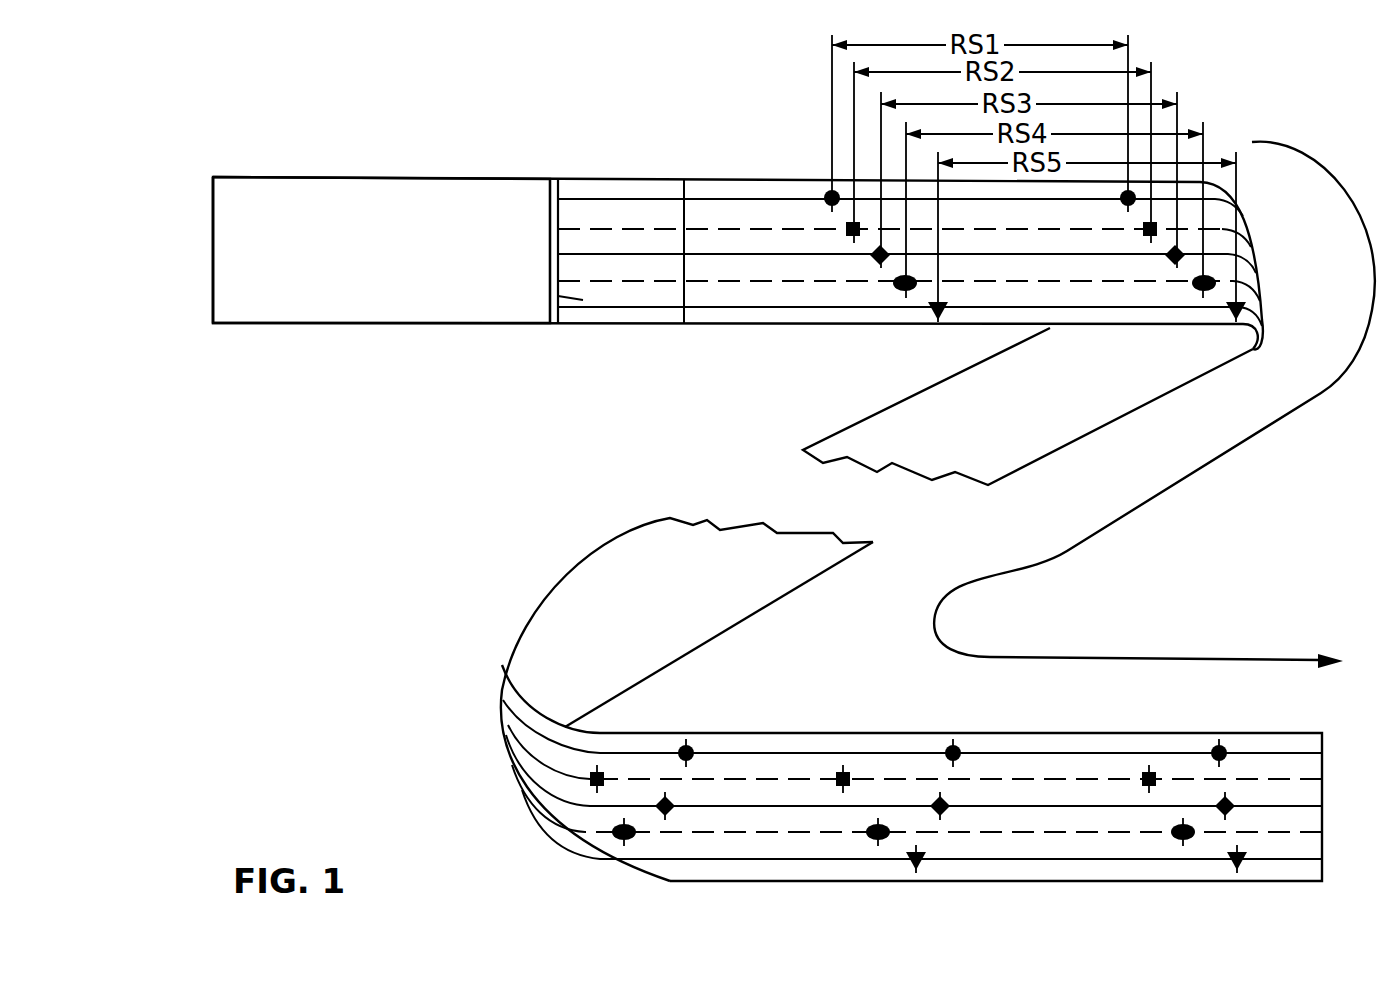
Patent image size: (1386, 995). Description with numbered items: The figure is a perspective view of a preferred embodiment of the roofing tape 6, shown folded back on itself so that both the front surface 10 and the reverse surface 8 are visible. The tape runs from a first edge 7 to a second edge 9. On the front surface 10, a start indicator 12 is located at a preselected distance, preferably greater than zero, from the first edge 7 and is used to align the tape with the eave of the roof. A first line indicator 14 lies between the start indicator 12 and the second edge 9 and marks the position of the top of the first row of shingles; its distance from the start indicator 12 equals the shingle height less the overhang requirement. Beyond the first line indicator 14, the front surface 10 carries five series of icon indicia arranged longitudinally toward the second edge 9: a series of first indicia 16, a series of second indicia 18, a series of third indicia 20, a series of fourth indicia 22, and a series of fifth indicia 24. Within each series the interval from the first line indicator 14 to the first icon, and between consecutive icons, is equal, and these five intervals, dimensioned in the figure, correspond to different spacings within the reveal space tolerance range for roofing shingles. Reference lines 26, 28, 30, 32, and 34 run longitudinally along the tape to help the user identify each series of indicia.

The roofing tape 6 is at (400, 324).
The first edge 7 is at (213, 243).
The reverse surface 8 is at (640, 556).
The second edge 9 is at (1322, 795).
The front surface 10 is at (399, 191).
The start indicator 12 is at (583, 300).
The first line indicator 14 is at (692, 288).
The series of first indicia 16 is at (828, 192).
The series of second indicia 18 is at (847, 236).
The series of third indicia 20 is at (875, 262).
The series of fourth indicia 22 is at (898, 291).
The series of fifth indicia 24 is at (940, 315).
The reference line 26 is at (706, 750).
The reference line 28 is at (726, 778).
The reference line 30 is at (754, 806).
The reference line 32 is at (774, 831).
The reference line 34 is at (832, 858).